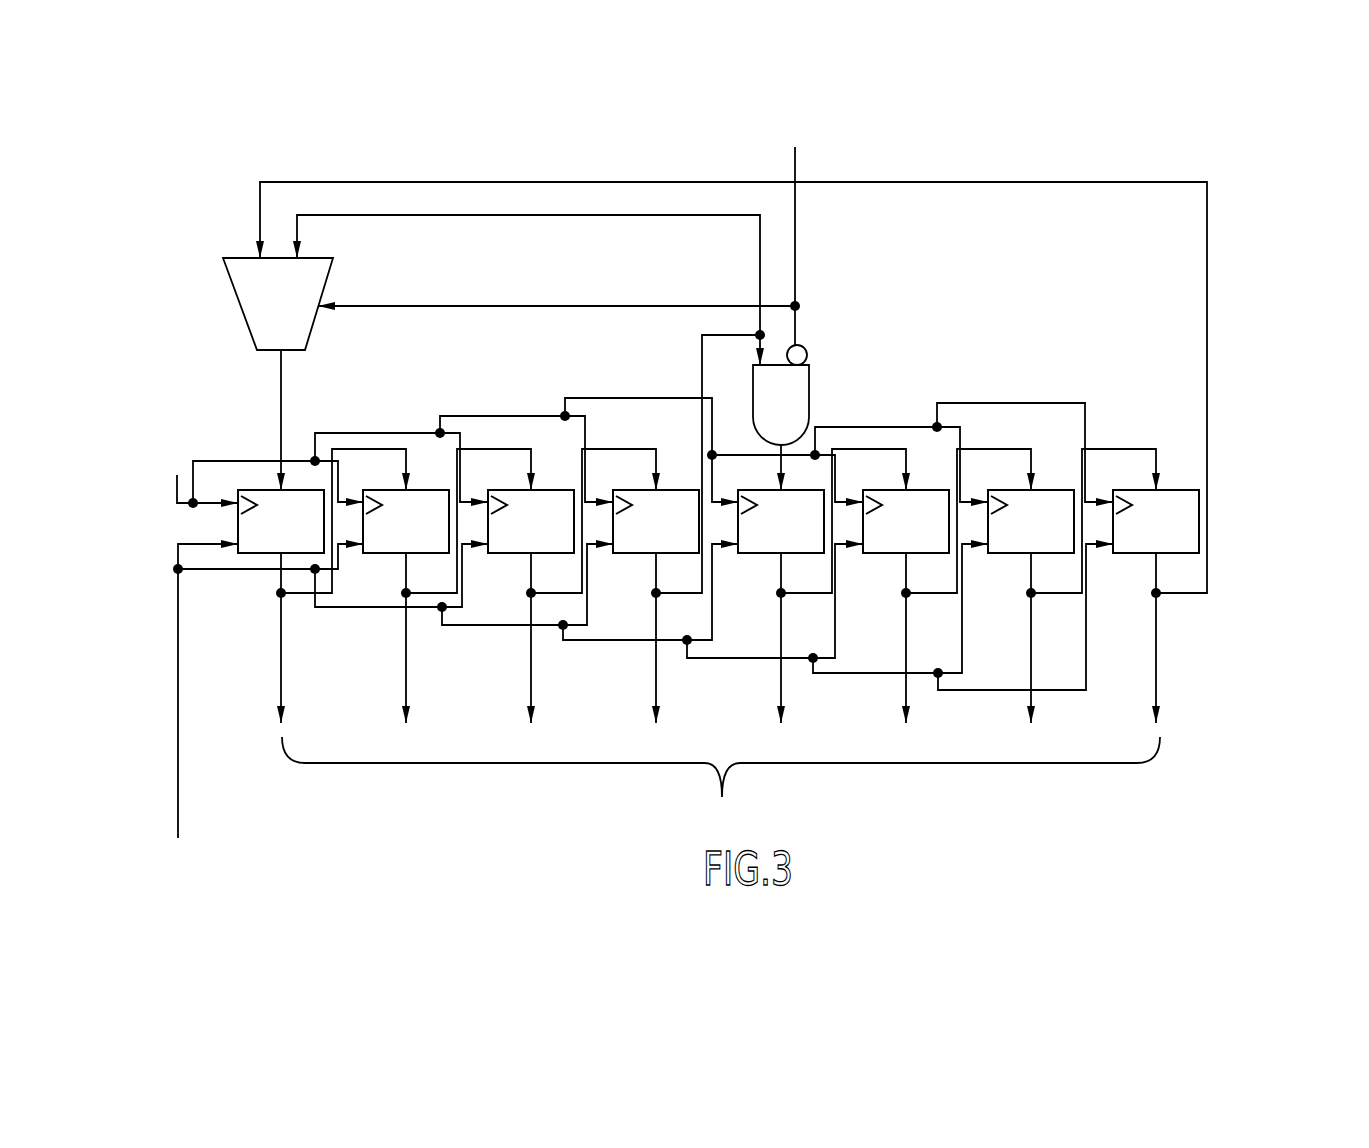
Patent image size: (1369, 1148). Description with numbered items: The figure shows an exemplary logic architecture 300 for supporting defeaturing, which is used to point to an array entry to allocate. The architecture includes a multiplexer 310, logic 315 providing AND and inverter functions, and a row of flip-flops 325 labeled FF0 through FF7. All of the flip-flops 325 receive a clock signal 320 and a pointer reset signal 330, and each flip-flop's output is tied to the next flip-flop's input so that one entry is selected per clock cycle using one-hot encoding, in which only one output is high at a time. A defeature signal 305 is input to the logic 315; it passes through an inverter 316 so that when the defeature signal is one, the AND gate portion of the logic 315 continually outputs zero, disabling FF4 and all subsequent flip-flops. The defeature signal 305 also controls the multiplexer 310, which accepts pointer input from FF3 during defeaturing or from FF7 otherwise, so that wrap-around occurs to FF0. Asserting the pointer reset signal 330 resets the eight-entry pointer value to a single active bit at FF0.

The logic architecture 300 is at (193, 155).
The defeature signal 305 is at (795, 160).
The multiplexer 310 is at (333, 262).
The logic 315 is at (809, 400).
The inverter 316 is at (807, 352).
The clock signal 320 is at (177, 503).
The flip-flops 325 is at (1214, 467).
The pointer reset signal 330 is at (178, 800).